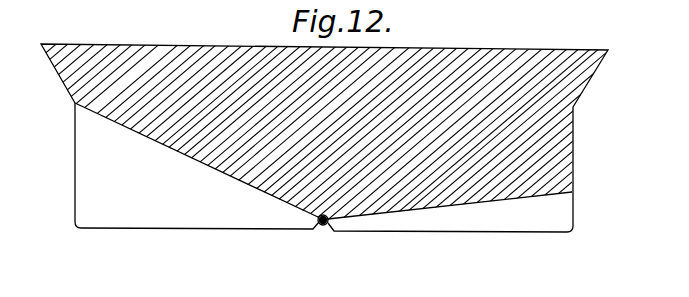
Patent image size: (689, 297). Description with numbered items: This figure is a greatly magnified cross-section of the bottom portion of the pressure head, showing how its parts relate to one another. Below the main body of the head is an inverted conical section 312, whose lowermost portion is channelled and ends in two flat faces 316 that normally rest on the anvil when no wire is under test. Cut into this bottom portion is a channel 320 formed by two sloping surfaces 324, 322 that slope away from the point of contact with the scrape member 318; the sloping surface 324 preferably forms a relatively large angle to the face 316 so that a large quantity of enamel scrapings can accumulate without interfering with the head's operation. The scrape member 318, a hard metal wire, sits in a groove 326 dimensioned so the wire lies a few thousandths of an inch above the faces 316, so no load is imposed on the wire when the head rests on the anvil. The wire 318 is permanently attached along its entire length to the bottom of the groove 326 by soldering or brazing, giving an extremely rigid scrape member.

The inverted conical section 312 is at (603, 64).
The flat faces 316 is at (220, 229).
The scrape member 318 is at (318, 225).
The channel 320 is at (145, 210).
The sloping surface 322 is at (560, 198).
The sloping surface 324 is at (110, 117).
The groove 326 is at (328, 226).